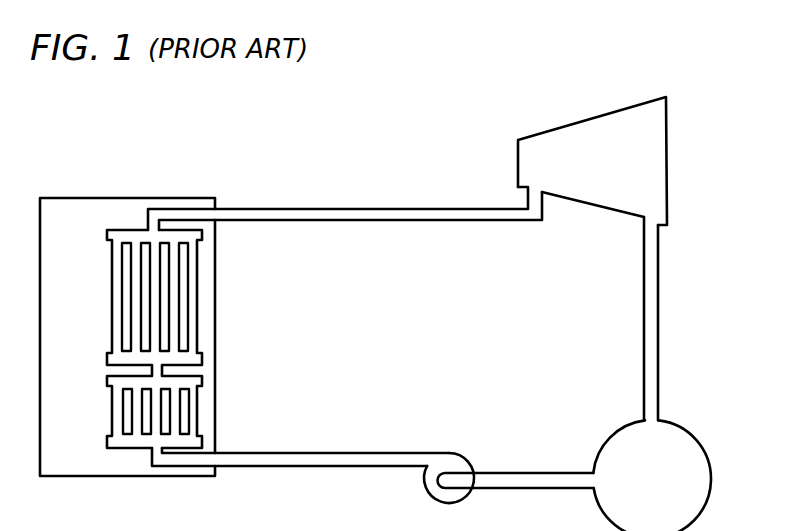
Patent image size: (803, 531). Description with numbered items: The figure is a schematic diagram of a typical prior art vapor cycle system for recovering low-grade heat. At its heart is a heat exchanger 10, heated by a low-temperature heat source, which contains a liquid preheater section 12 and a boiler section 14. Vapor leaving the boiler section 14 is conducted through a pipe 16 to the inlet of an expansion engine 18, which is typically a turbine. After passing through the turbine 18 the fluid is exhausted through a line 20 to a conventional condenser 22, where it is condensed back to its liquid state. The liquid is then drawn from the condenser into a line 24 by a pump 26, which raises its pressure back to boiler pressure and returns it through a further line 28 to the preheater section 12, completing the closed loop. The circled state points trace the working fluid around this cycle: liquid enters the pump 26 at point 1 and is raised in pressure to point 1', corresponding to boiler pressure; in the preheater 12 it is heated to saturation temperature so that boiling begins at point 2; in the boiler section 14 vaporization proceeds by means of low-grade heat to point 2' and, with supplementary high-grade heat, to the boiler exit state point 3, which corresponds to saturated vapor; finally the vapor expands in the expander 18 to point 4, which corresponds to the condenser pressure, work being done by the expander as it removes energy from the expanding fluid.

The heat exchanger 10 is at (267, 333).
The liquid preheater section 12 is at (232, 417).
The boiler section 14 is at (222, 302).
The pipe 16 is at (385, 207).
The expansion engine 18 is at (570, 123).
The line 20 is at (659, 376).
The condenser 22 is at (711, 479).
The line 24 is at (571, 489).
The pump 26 is at (450, 503).
The feed line 28 is at (295, 467).
The point 1 is at (573, 450).
The point 1' is at (423, 432).
The point 2 is at (237, 363).
The point 2' is at (235, 397).
The boiler exit state point 3 is at (233, 243).
The point 4 is at (618, 240).